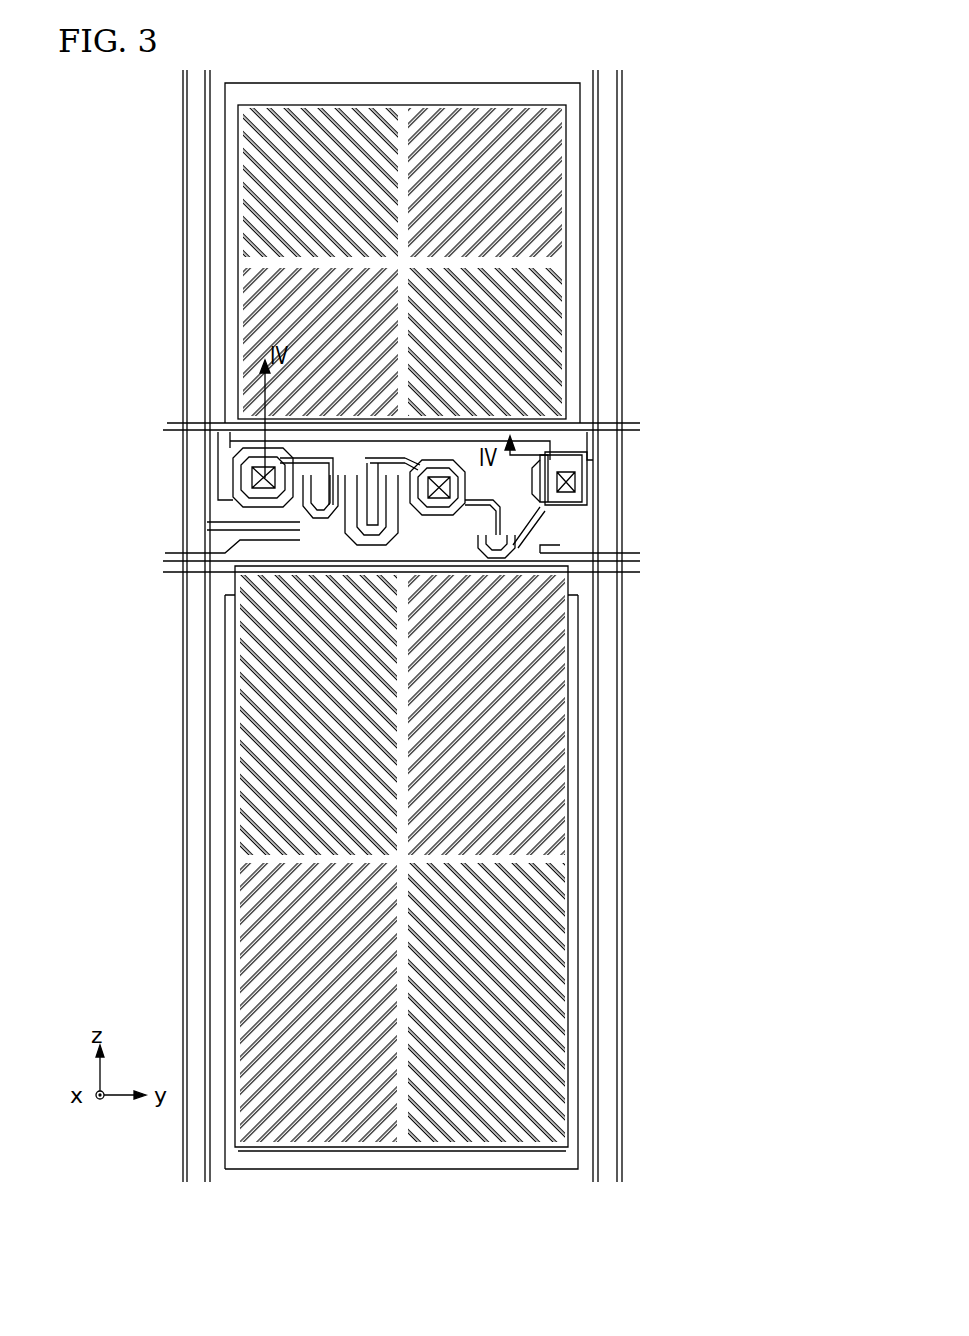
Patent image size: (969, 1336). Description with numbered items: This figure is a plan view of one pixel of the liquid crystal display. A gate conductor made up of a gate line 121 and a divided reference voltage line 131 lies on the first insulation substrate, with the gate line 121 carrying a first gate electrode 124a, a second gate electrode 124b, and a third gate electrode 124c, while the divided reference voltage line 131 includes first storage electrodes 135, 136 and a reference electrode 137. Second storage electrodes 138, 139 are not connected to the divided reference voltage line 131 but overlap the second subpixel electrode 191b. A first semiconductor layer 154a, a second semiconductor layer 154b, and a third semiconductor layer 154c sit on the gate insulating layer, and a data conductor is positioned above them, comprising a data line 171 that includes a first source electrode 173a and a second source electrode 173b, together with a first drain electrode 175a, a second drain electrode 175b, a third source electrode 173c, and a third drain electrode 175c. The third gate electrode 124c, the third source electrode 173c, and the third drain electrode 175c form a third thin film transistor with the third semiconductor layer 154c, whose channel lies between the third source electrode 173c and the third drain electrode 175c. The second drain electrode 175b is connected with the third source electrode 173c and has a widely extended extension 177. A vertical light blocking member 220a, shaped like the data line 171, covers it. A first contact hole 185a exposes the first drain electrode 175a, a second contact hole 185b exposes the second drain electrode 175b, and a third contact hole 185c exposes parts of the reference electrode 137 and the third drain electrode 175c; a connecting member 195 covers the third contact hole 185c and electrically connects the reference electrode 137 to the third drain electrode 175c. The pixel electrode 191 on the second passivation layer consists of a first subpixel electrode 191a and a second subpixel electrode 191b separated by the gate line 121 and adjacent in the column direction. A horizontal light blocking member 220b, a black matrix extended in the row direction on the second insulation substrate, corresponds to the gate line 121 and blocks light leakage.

The data line 171 is at (187, 118).
The first storage electrode 136 is at (580, 130).
The first storage electrode 135 is at (580, 262).
The vertical light blocking member 220a is at (617, 190).
The horizontal light blocking member 220b is at (638, 424).
The first subpixel electrode 191a is at (243, 233).
The second subpixel electrode 191b is at (238, 760).
The pixel electrode 191 is at (315, 858).
The divided reference voltage line 131 is at (620, 432).
The gate line 121 is at (180, 553).
The first gate electrode 124a is at (312, 470).
The second gate electrode 124b is at (377, 478).
The third gate electrode 124c is at (560, 542).
The first semiconductor layer 154a is at (340, 470).
The second semiconductor layer 154b is at (360, 470).
The third semiconductor layer 154c is at (495, 558).
The first source electrode 173a is at (310, 505).
The second source electrode 173b is at (365, 555).
The third source electrode 173c is at (560, 512).
The first drain electrode 175a is at (240, 470).
The second drain electrode 175b is at (335, 550).
The third drain electrode 175c is at (525, 548).
The first contact hole 185a is at (258, 478).
The second contact hole 185b is at (440, 470).
The third contact hole 185c is at (575, 482).
The extension 177 is at (470, 500).
The reference electrode 137 is at (587, 462).
The connecting member 195 is at (590, 500).
The second storage electrode 138 is at (580, 890).
The second storage electrode 139 is at (580, 1130).